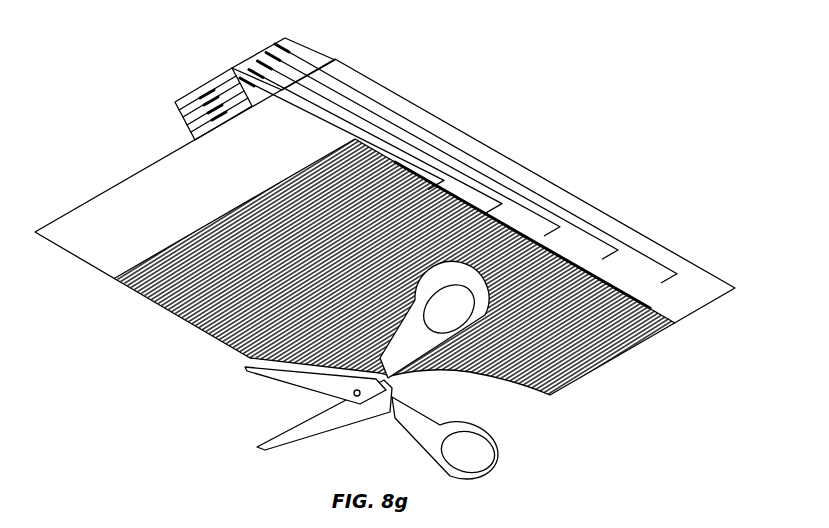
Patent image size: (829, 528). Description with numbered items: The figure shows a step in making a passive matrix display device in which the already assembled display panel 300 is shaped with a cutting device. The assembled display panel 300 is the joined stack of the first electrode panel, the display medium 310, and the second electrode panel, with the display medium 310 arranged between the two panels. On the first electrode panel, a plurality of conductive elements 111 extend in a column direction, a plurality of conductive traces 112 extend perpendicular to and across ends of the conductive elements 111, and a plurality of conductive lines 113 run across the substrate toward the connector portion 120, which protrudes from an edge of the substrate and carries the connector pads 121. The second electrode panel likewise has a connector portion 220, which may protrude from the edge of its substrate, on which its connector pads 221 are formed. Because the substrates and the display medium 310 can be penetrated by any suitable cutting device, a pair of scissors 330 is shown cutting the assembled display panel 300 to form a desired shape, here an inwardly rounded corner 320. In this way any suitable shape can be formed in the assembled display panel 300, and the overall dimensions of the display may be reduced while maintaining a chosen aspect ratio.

The assembled display panel 300 is at (425, 220).
The display medium 310 is at (693, 306).
The conductive elements 111 is at (578, 374).
The conductive traces 112 is at (651, 306).
The conductive lines 113 is at (600, 226).
The connector portion 120 is at (306, 48).
The connector pads 121 is at (288, 57).
The connector portion 220 is at (180, 94).
The connector pads 221 is at (178, 117).
The inwardly rounded corner 320 is at (510, 404).
The scissors 330 is at (299, 398).